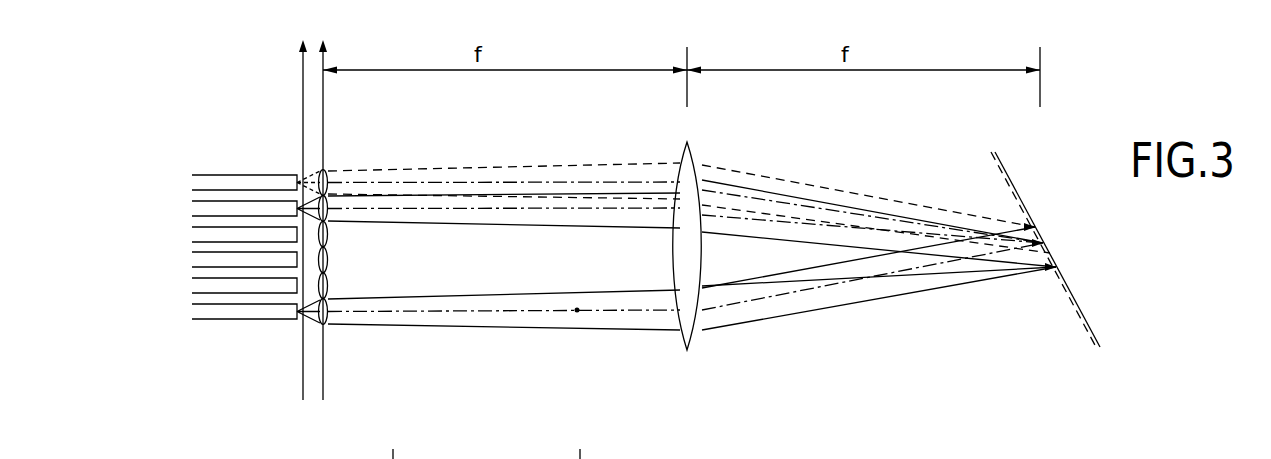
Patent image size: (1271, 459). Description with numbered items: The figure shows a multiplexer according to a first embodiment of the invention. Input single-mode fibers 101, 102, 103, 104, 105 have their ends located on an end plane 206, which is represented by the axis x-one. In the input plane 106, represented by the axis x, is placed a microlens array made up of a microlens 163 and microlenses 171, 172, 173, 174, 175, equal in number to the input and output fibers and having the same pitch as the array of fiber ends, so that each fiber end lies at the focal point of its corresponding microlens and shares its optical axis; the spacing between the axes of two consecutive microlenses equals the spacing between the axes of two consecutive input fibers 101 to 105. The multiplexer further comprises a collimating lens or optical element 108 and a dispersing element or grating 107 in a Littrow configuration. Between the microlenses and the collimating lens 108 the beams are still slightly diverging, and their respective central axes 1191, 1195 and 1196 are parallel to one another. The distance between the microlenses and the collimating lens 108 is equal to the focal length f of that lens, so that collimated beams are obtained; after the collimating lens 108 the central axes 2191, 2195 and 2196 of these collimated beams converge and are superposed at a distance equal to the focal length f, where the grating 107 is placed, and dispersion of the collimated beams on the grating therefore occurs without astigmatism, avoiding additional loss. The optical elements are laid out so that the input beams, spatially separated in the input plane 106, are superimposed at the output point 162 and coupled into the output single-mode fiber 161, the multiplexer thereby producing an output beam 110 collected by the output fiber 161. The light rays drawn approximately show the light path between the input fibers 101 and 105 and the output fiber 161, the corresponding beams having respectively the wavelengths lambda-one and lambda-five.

The input single-mode fiber 101 is at (195, 208).
The input single-mode fiber 102 is at (193, 237).
The input single-mode fiber 103 is at (195, 260).
The input single-mode fiber 104 is at (197, 285).
The input single-mode fiber 105 is at (195, 312).
The input plane 106 is at (323, 88).
The grating 107 is at (1010, 172).
The collimating lens 108 is at (693, 160).
The output beam 110 is at (490, 163).
The output fiber 161 is at (192, 175).
The output point 162 is at (300, 160).
The microlens 163 is at (330, 178).
The microlens 171 is at (328, 226).
The microlens 172 is at (328, 203).
The microlens 173 is at (330, 258).
The microlens 174 is at (330, 288).
The microlens 175 is at (330, 322).
The end plane 206 is at (300, 118).
The central axis 1191 is at (573, 212).
The central axis 1195 is at (580, 312).
The central axis 1196 is at (585, 182).
The central axis 2191 is at (723, 215).
The central axis 2195 is at (823, 287).
The central axis 2196 is at (735, 178).